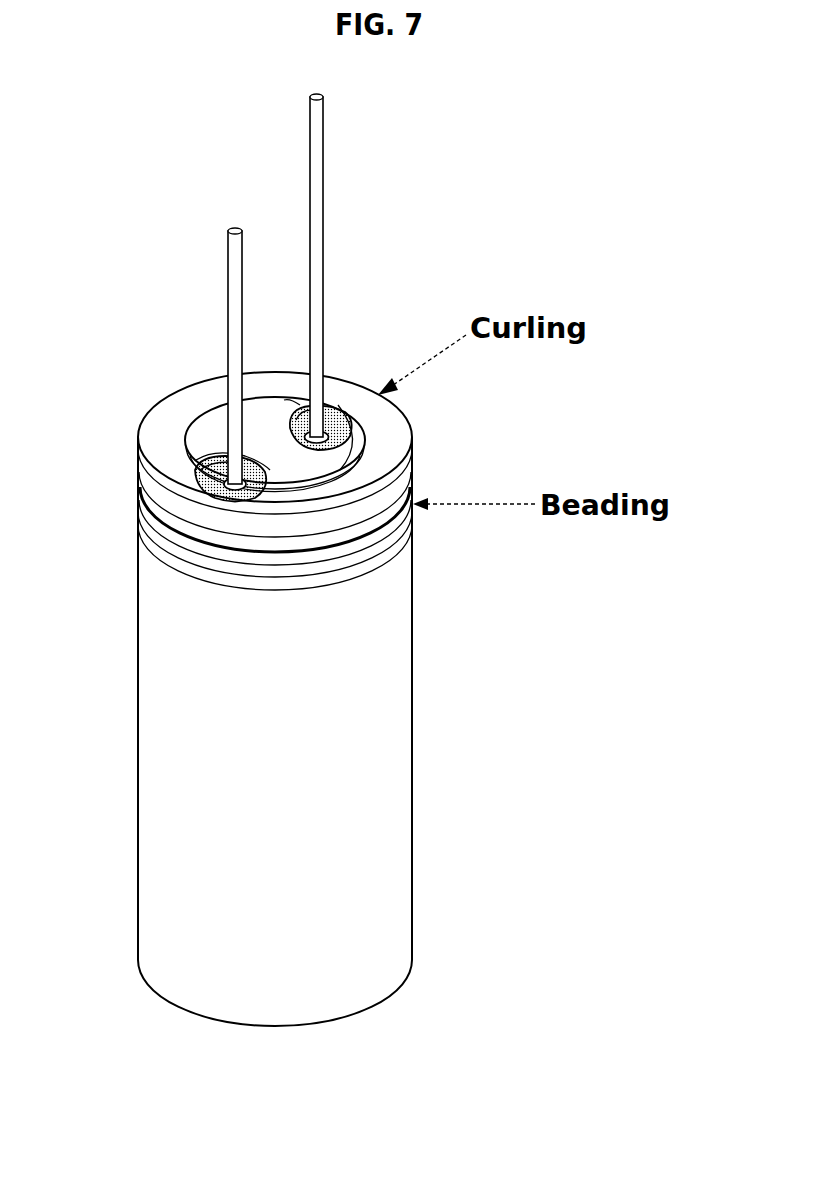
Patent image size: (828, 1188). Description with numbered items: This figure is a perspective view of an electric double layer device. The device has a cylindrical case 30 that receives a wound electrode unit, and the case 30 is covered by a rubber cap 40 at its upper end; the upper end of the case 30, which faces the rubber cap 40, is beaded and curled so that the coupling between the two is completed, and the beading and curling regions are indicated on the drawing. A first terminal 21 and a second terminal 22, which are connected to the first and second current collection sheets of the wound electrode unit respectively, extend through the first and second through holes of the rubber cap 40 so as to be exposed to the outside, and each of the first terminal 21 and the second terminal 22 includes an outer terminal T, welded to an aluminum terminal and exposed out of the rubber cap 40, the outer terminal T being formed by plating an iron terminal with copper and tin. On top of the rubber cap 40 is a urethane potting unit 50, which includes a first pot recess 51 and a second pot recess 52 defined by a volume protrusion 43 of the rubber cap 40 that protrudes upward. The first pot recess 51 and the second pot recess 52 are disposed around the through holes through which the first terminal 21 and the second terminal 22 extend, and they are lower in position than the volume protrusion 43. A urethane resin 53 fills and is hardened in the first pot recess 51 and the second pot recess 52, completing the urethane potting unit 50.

The first terminal 21 is at (348, 226).
The second terminal 22 is at (210, 292).
The case 30 is at (400, 735).
The rubber cap 40 is at (352, 460).
The volume protrusion 43 is at (215, 426).
The urethane potting unit 50 is at (371, 366).
The first pot recess 51 is at (350, 426).
The second pot recess 52 is at (222, 478).
The urethane resin 53 is at (346, 405).
The outer terminal T is at (312, 148).